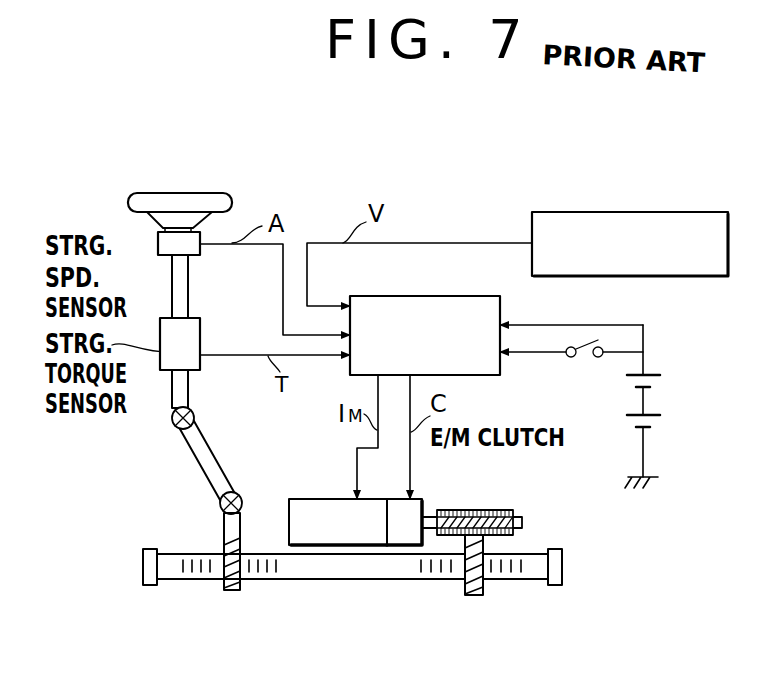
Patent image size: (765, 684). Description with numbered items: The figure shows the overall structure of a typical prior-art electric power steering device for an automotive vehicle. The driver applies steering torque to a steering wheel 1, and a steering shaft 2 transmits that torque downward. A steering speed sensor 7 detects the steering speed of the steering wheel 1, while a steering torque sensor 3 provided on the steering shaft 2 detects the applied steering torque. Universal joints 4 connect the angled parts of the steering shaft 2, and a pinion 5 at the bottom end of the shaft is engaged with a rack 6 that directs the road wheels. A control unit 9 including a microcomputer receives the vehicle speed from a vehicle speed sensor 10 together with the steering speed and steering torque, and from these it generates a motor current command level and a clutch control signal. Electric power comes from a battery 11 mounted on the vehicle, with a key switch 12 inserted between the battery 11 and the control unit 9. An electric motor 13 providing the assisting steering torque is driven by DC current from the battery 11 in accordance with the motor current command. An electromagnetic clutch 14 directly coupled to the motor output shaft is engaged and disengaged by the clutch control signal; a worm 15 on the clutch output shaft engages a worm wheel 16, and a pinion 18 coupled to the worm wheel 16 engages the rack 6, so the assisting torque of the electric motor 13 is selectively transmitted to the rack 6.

The steering wheel 1 is at (215, 192).
The steering shaft 2 is at (190, 286).
The steering torque sensor 3 is at (201, 338).
The universal joints 4 is at (171, 420).
The pinion 5 is at (228, 592).
The rack 6 is at (320, 571).
The steering speed sensor 7 is at (158, 245).
The control unit 9 is at (438, 296).
The vehicle speed sensor 10 is at (578, 212).
The battery 11 is at (651, 400).
The key switch 12 is at (582, 359).
The electric motor 13 is at (331, 497).
The electromagnetic clutch 14 is at (416, 497).
The worm 15 is at (523, 522).
The worm wheel 16 is at (514, 511).
The pinion 18 is at (470, 597).